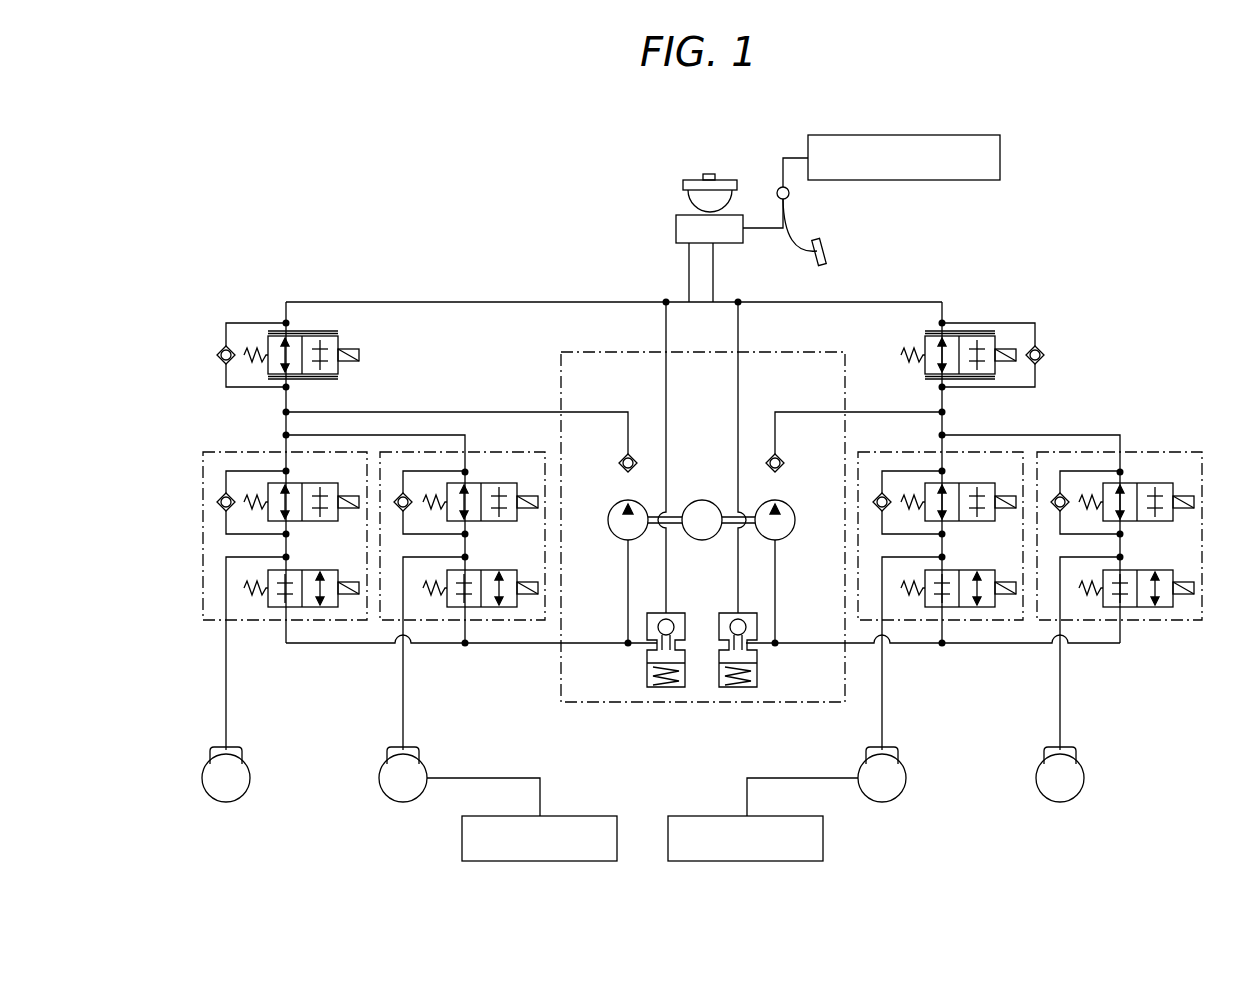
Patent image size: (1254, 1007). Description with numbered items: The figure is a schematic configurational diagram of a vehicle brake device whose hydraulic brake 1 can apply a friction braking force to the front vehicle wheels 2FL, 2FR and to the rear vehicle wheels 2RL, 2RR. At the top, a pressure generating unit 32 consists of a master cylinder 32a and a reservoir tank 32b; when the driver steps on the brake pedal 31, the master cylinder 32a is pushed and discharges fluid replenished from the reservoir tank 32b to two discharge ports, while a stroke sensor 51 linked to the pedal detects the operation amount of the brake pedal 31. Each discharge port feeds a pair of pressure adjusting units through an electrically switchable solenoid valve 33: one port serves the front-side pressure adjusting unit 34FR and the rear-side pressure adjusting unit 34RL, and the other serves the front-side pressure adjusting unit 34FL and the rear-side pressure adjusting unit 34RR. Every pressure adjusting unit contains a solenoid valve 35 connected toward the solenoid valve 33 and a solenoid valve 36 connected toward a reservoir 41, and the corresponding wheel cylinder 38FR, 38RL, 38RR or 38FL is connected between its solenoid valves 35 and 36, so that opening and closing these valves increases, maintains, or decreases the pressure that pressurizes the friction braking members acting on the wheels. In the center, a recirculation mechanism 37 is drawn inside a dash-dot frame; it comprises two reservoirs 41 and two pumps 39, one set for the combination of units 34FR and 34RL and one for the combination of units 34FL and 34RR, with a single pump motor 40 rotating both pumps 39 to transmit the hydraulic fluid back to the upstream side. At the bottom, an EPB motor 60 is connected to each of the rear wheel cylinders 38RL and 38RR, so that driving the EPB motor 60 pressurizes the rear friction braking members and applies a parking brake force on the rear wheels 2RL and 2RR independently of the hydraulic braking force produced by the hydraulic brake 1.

The hydraulic brake 1 is at (1045, 168).
The vehicle wheel 2FR is at (226, 792).
The vehicle wheel 2RL is at (403, 792).
The vehicle wheel 2RR is at (882, 792).
The vehicle wheel 2FL is at (1060, 792).
The brake pedal 31 is at (826, 250).
The pressure generating unit 32 is at (675, 187).
The master cylinder 32a is at (676, 229).
The reservoir tank 32b is at (686, 180).
The solenoid valve 33 is at (335, 333).
The pressure adjusting unit 34FR is at (217, 450).
The pressure adjusting unit 34RL is at (470, 452).
The pressure adjusting unit 34RR is at (866, 452).
The pressure adjusting unit 34FL is at (1132, 452).
The solenoid valve 35 is at (298, 483).
The solenoid valve 36 is at (298, 570).
The recirculation mechanism 37 is at (703, 546).
The wheel cylinder 38FR is at (234, 750).
The wheel cylinder 38RL is at (411, 750).
The wheel cylinder 38RR is at (890, 750).
The wheel cylinder 38FL is at (1068, 750).
The pump 39 is at (610, 540).
The pump motor 40 is at (702, 540).
The reservoir 41 is at (647, 676).
The stroke sensor 51 is at (897, 135).
The EPB motor 60 is at (559, 816).